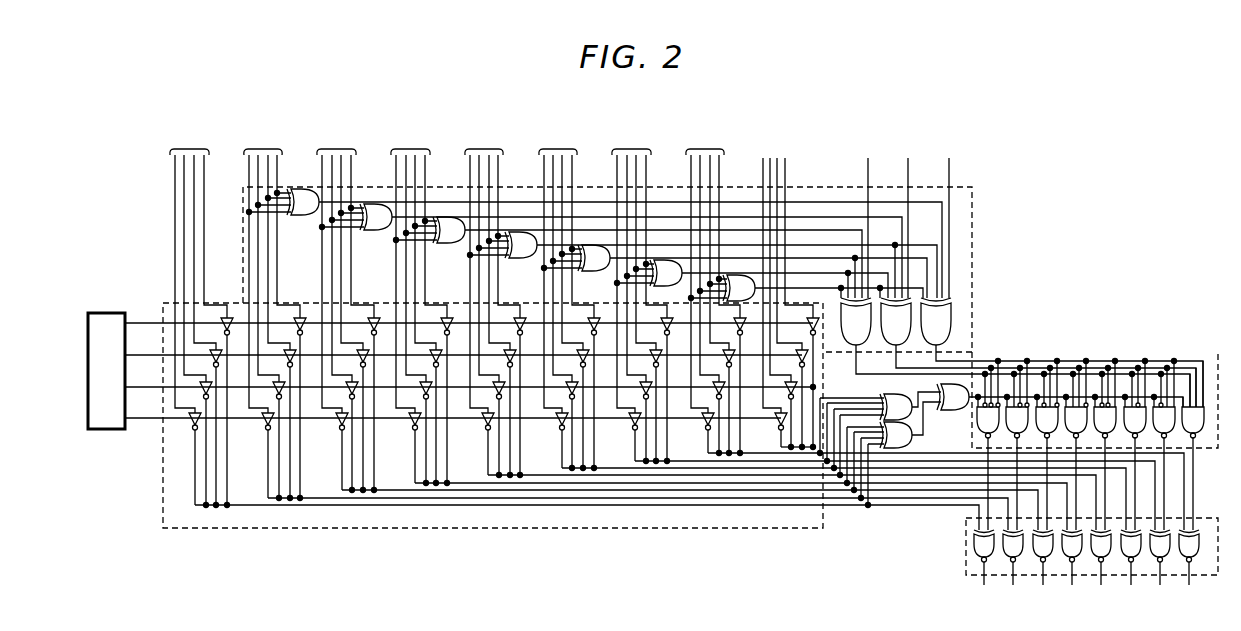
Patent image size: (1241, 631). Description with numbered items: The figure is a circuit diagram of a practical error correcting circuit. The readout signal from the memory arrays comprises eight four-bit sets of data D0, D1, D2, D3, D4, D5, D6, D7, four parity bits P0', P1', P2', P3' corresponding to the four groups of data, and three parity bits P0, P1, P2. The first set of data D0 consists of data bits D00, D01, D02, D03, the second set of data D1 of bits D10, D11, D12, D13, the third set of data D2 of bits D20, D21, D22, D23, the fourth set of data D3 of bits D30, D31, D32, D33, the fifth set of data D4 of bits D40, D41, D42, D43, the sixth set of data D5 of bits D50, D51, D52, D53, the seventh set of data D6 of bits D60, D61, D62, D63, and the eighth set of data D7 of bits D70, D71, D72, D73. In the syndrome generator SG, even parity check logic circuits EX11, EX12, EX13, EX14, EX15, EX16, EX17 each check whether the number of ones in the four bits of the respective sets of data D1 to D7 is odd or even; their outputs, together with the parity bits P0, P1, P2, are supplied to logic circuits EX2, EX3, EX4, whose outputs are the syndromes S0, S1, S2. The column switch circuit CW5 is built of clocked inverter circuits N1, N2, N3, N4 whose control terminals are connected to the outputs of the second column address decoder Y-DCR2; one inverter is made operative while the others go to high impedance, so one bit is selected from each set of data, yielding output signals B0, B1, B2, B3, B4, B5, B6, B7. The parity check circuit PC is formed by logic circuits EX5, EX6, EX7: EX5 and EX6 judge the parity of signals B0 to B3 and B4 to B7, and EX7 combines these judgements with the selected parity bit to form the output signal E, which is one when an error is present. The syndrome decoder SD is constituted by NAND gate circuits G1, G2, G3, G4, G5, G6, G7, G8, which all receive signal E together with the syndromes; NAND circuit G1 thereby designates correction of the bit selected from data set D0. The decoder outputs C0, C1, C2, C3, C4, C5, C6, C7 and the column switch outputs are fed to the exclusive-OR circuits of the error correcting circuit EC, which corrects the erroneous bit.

The second column address decoder Y-DCR2 is at (452, 371).
The column switch circuit CW5 is at (668, 528).
The syndrome generator SG is at (972, 257).
The syndrome decoder SD is at (1158, 352).
The error correcting circuit EC is at (966, 548).
The parity check circuit PC is at (894, 438).
The first set of data D0 is at (189, 143).
The second set of data D1 is at (263, 143).
The third set of data D2 is at (336, 143).
The fourth set of data D3 is at (410, 143).
The fifth set of data D4 is at (484, 143).
The sixth set of data D5 is at (558, 143).
The seventh set of data D6 is at (631, 143).
The eighth set of data D7 is at (705, 143).
The data bit D00 is at (177, 309).
The data bit D01 is at (174, 330).
The data bit D02 is at (218, 330).
The data bit D03 is at (214, 311).
The data bit D10 is at (249, 153).
The data bit D11 is at (258, 163).
The data bit D12 is at (268, 163).
The data bit D13 is at (277, 153).
The data bit D20 is at (322, 153).
The data bit D21 is at (332, 180).
The data bit D22 is at (341, 180).
The data bit D23 is at (351, 153).
The data bit D30 is at (396, 153).
The data bit D31 is at (406, 163).
The data bit D32 is at (415, 163).
The data bit D33 is at (425, 153).
The data bit D40 is at (470, 153).
The data bit D41 is at (479, 180).
The data bit D42 is at (489, 180).
The data bit D43 is at (498, 153).
The data bit D50 is at (544, 153).
The data bit D51 is at (553, 163).
The data bit D52 is at (562, 163).
The data bit D53 is at (572, 153).
The data bit D60 is at (617, 153).
The data bit D61 is at (627, 180).
The data bit D62 is at (636, 180).
The data bit D63 is at (646, 153).
The data bit D70 is at (691, 153).
The data bit D71 is at (700, 163).
The data bit D72 is at (710, 163).
The data bit D73 is at (719, 153).
The clocked inverter circuit N1 is at (218, 329).
The clocked inverter circuit N2 is at (207, 361).
The clocked inverter circuit N3 is at (197, 393).
The clocked inverter circuit N4 is at (185, 424).
The logic circuit EX11 is at (595, 243).
The logic circuit EX12 is at (611, 251).
The logic circuit EX13 is at (628, 257).
The logic circuit EX14 is at (703, 265).
The logic circuit EX15 is at (735, 271).
The logic circuit EX16 is at (752, 281).
The logic circuit EX17 is at (757, 289).
The logic circuit EX2 is at (856, 321).
The logic circuit EX3 is at (896, 321).
The logic circuit EX4 is at (936, 321).
The logic circuit EX5 is at (880, 396).
The logic circuit EX6 is at (912, 438).
The logic circuit EX7 is at (966, 399).
The parity bit P0 is at (868, 219).
The parity bit P1 is at (908, 219).
The parity bit P2 is at (949, 219).
The parity bit P0' is at (763, 286).
The parity bit P1' is at (779, 279).
The parity bit P2' is at (792, 286).
The parity bit P3' is at (804, 294).
The syndrome S0 is at (1012, 376).
The syndrome S1 is at (1035, 376).
The syndrome S2 is at (1059, 376).
The output signal E is at (972, 396).
The NAND circuit G1 is at (990, 411).
The NAND gate circuit G2 is at (1018, 411).
The NAND gate circuit G3 is at (1048, 411).
The NAND gate circuit G4 is at (1077, 411).
The NAND gate circuit G5 is at (1106, 411).
The NAND gate circuit G6 is at (1136, 411).
The NAND gate circuit G7 is at (1165, 411).
The NAND gate circuit G8 is at (1194, 411).
The output signal C0 is at (994, 431).
The output signal C1 is at (1022, 428).
The output signal C2 is at (1051, 431).
The output signal C3 is at (1080, 428).
The output signal C4 is at (1109, 431).
The output signal C5 is at (1139, 428).
The output signal C6 is at (1169, 431).
The output signal C7 is at (1198, 428).
The output signal B0 is at (868, 506).
The output signal B1 is at (1000, 512).
The output signal B2 is at (1030, 506).
The output signal B3 is at (1059, 499).
The output signal B4 is at (1088, 493).
The output signal B5 is at (1118, 486).
The output signal B6 is at (1147, 480).
The output signal B7 is at (1176, 473).